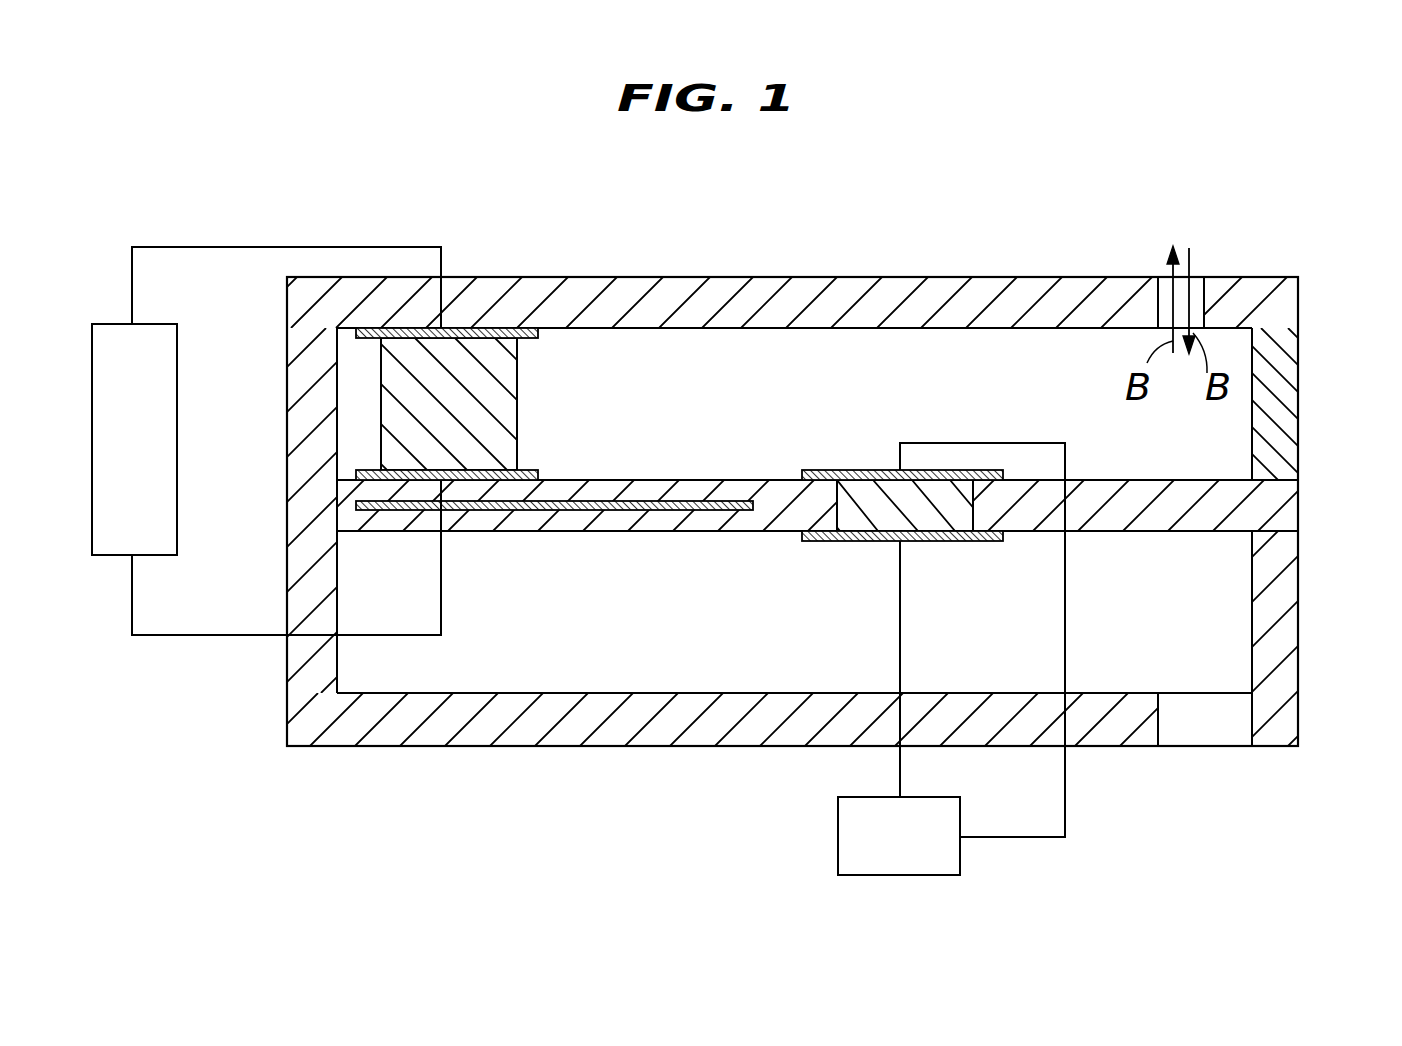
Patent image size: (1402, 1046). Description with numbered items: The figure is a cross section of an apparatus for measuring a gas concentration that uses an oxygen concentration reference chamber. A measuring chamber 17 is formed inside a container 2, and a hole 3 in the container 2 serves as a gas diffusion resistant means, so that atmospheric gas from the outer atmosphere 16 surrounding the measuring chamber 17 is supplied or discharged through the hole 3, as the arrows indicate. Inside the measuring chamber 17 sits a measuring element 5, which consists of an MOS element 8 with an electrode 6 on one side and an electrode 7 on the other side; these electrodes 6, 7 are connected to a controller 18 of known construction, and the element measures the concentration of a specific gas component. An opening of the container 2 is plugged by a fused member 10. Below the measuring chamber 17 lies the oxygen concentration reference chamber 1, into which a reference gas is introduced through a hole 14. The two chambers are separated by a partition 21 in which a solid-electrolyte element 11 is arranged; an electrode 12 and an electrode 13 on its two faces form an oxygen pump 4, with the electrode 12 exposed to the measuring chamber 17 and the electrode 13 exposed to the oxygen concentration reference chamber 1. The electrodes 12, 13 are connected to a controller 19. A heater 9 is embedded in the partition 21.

The oxygen concentration reference chamber 1 is at (632, 640).
The container 2 is at (923, 298).
The hole 3 is at (1178, 298).
The oxygen pump 4 is at (881, 506).
The measuring element 5 is at (451, 378).
The electrode 6 is at (412, 333).
The electrode 7 is at (358, 478).
The MOS element 8 is at (410, 392).
The heater 9 is at (688, 480).
The fused member 10 is at (1280, 398).
The solid-electrolyte element 11 is at (962, 507).
The electrode 12 is at (823, 470).
The electrode 13 is at (938, 543).
The hole 14 is at (1197, 725).
The outer atmosphere 16 is at (537, 221).
The measuring chamber 17 is at (1025, 411).
The controller 18 is at (266, 441).
The controller 19 is at (951, 659).
The partition 21 is at (560, 520).